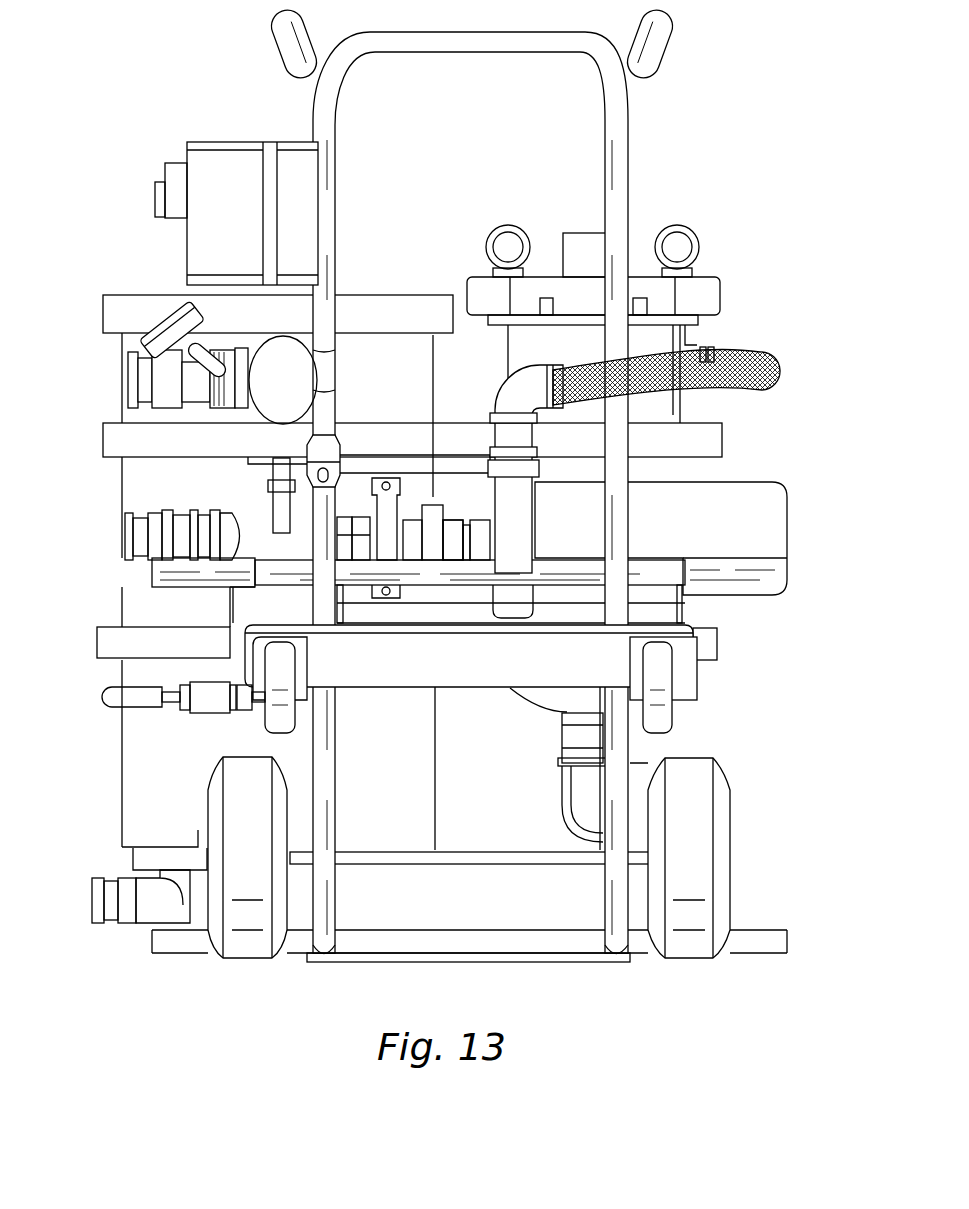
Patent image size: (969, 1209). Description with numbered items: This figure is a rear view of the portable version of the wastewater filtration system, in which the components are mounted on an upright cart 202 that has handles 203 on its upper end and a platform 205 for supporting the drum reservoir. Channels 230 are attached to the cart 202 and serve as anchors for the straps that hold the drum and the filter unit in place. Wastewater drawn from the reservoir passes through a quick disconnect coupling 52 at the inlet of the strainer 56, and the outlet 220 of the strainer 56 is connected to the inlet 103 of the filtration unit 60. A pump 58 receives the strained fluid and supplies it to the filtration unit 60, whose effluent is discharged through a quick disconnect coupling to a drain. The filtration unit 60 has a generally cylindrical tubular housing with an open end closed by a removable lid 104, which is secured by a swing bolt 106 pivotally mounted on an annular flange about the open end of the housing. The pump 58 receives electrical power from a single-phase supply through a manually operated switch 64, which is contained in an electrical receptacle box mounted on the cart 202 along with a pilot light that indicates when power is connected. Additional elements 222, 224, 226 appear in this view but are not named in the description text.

The quick disconnect coupling 52 is at (147, 378).
The strainer 56 is at (235, 607).
The pump 58 is at (740, 482).
The filtration unit 60 is at (106, 719).
The manually operated switch 64 is at (158, 198).
The inlet of the filtration unit 103 is at (697, 342).
The removable lid 104 is at (647, 277).
The swing bolt 106 is at (272, 712).
The upright cart 202 is at (642, 139).
The handles 203 is at (282, 55).
The platform 205 is at (537, 962).
The outlet of the strainer 220 is at (347, 528).
The pump 222 is at (470, 520).
The elbow pipe 224 is at (535, 527).
The hose 226 is at (740, 393).
The channels 230 is at (693, 443).